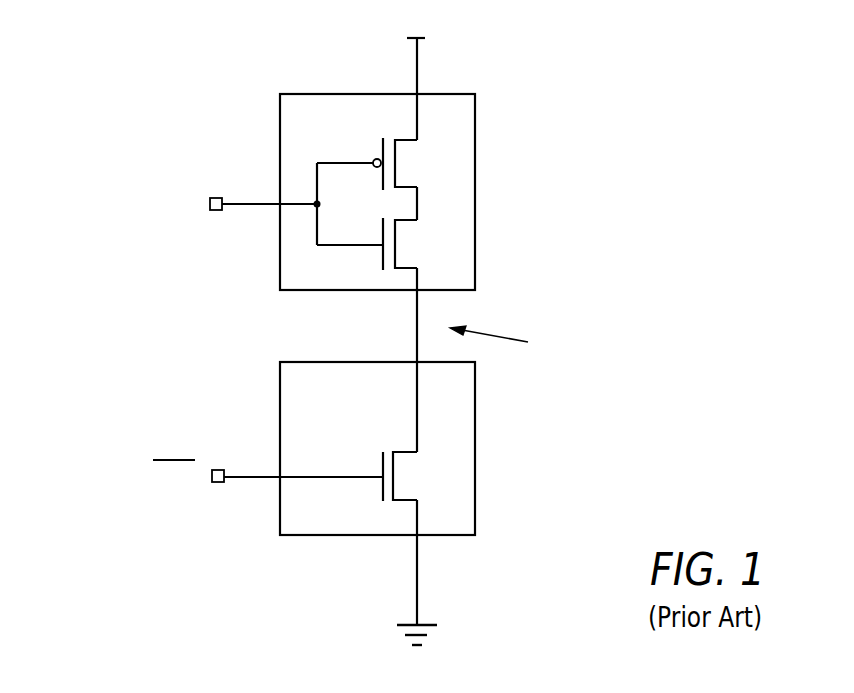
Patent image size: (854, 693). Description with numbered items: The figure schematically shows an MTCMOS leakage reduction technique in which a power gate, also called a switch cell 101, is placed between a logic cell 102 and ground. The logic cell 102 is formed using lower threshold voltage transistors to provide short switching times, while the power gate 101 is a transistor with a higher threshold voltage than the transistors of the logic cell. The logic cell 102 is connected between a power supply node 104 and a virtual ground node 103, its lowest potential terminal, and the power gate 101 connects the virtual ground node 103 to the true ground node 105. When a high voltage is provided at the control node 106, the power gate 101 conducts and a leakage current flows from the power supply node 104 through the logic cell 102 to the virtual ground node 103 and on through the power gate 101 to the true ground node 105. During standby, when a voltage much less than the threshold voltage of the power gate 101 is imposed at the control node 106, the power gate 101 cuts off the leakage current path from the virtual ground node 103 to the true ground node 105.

The power gate or switch cell 101 is at (280, 389).
The logic cell 102 is at (280, 117).
The virtual ground node 103 is at (417, 323).
The power supply node 104 is at (419, 40).
The true ground node 105 is at (418, 581).
The control node 106 is at (218, 483).